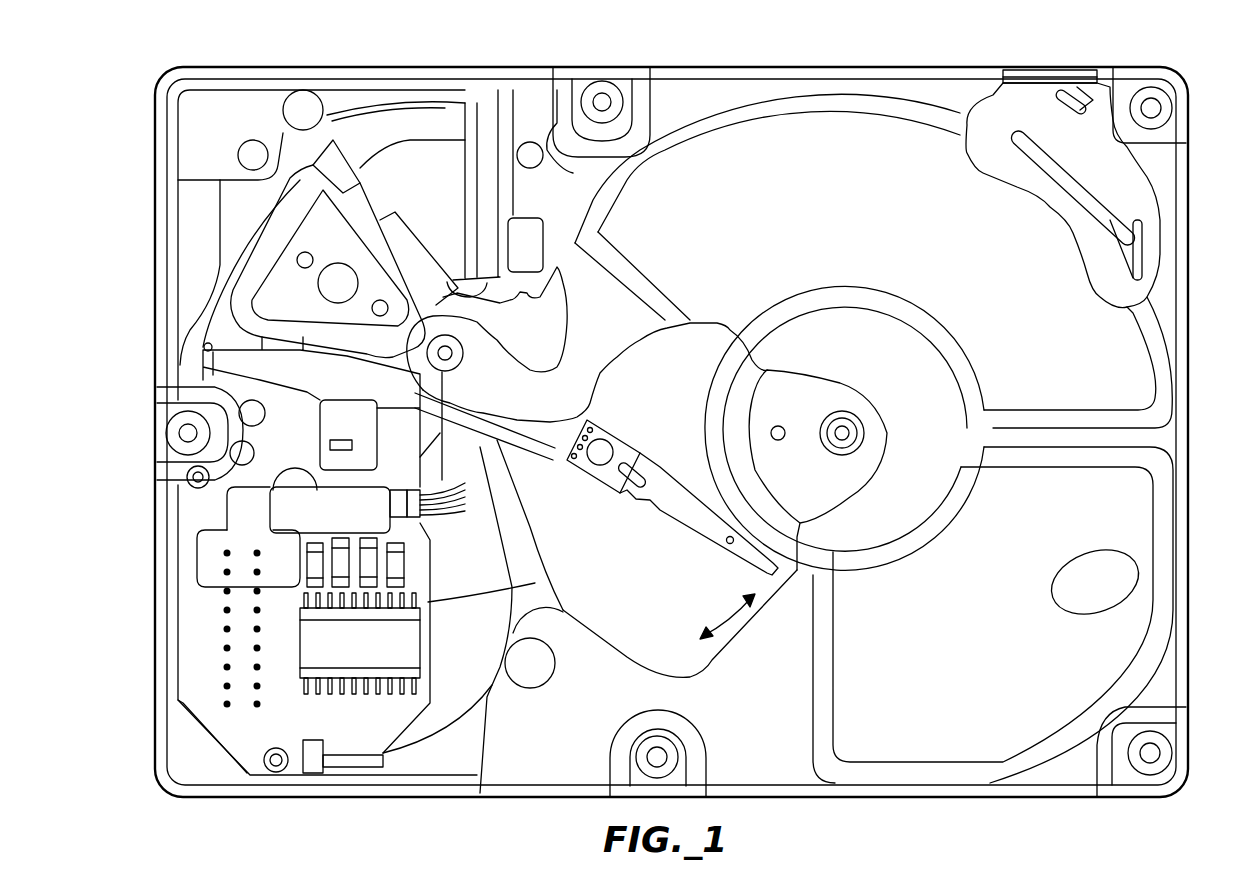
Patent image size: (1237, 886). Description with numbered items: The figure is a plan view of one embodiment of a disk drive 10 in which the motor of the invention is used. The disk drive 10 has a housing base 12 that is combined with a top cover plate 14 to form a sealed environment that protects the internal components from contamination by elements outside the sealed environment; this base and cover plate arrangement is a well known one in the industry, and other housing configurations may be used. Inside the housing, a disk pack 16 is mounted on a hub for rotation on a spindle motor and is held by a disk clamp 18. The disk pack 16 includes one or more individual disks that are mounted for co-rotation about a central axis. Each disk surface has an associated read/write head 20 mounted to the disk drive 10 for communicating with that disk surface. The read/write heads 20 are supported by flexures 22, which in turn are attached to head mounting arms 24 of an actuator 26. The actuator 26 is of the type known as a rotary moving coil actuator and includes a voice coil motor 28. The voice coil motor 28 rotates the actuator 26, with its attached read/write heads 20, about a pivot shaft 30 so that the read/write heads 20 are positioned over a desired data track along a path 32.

The disk drive 10 is at (780, 50).
The housing base 12 is at (343, 797).
The top cover plate 14 is at (1167, 440).
The disk pack 16 is at (640, 637).
The disk clamp 18 is at (862, 462).
The read/write head 20 is at (813, 613).
The flexure 22 is at (712, 535).
The head mounting arm 24 is at (547, 440).
The actuator 26 is at (538, 330).
The voice coil motor 28 is at (405, 140).
The pivot shaft 30 is at (447, 358).
The path 32 is at (742, 630).